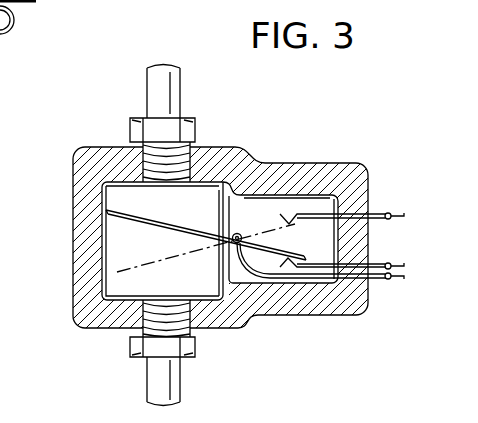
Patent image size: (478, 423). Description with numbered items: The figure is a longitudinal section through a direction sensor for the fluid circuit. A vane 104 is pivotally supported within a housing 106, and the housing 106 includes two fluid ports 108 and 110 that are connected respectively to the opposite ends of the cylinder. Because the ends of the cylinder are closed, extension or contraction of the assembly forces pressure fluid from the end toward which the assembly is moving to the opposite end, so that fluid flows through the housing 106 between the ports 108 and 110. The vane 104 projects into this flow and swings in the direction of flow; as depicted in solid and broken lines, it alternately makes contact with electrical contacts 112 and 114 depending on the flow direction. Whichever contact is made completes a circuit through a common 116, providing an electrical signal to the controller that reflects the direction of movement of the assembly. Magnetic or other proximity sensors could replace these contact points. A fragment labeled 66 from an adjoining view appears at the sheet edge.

The adjacent figure element 66 is at (12, 28).
The vane 104 is at (118, 226).
The housing 106 is at (238, 162).
The fluid port 108 is at (196, 126).
The fluid port 110 is at (197, 352).
The electrical contact 112 is at (378, 264).
The electrical contact 114 is at (381, 212).
The common 116 is at (375, 282).